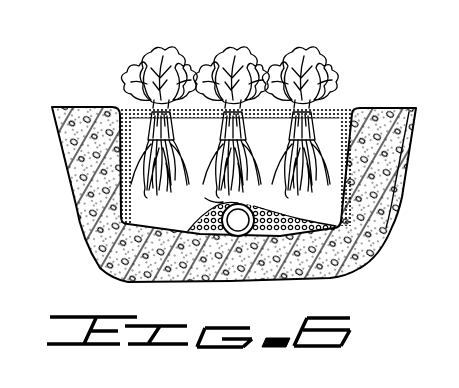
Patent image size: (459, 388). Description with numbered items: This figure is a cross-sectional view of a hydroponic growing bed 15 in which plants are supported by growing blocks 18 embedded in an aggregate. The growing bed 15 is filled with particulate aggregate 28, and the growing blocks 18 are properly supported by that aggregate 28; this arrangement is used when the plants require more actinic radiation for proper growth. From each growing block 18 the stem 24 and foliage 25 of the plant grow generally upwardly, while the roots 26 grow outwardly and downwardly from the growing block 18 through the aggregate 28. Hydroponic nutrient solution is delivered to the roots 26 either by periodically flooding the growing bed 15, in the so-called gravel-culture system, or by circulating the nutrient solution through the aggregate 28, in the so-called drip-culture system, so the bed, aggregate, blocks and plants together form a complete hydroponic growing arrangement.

The growing bed 15 is at (355, 135).
The growing block 18 is at (213, 130).
The stem 24 is at (321, 116).
The foliage 25 is at (330, 76).
The roots 26 is at (187, 199).
The particulate aggregate 28 is at (352, 159).